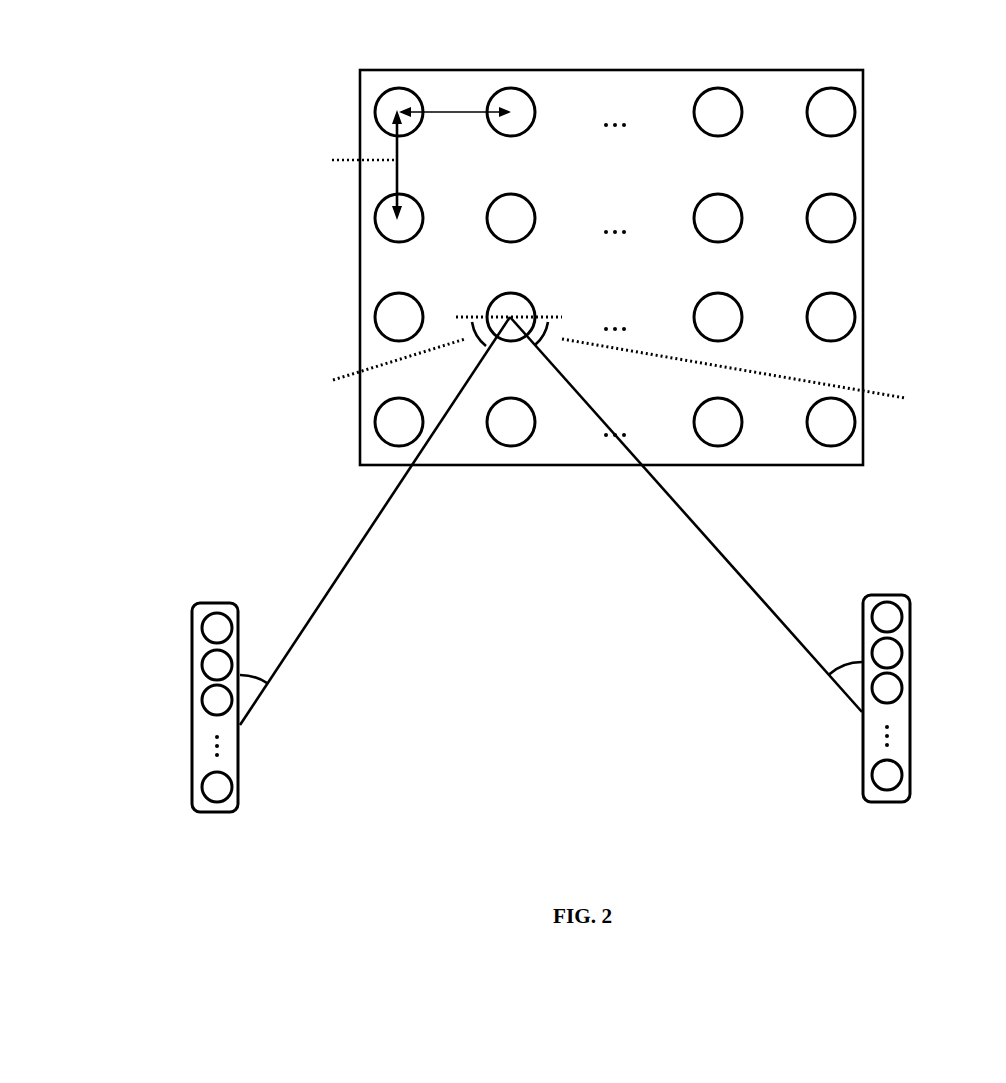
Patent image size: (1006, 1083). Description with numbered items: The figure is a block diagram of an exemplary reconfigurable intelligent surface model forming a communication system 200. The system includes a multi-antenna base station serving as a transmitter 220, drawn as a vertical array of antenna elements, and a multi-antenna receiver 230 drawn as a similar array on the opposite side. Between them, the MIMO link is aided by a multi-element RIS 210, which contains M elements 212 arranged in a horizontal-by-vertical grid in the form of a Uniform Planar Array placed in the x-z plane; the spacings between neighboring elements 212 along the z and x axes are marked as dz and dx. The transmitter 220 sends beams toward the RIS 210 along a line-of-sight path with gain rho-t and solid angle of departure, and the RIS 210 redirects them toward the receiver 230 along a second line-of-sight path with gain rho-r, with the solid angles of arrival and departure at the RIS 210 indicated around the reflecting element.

The communication system 200 is at (483, 418).
The reconfigurable intelligent surface (RIS) 210 is at (613, 266).
The RIS element 212 is at (838, 197).
The transmitter 220 is at (205, 729).
The receiver 230 is at (879, 721).